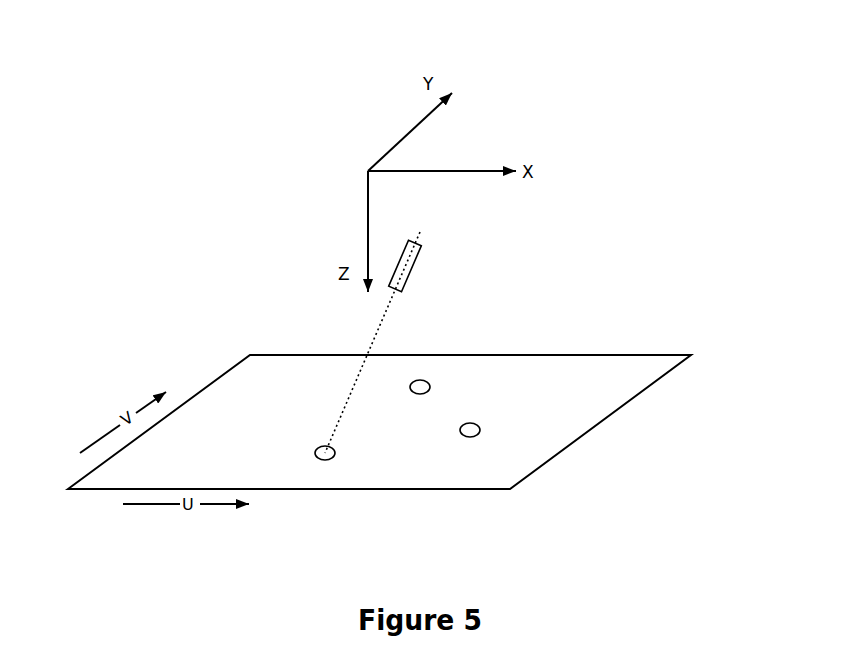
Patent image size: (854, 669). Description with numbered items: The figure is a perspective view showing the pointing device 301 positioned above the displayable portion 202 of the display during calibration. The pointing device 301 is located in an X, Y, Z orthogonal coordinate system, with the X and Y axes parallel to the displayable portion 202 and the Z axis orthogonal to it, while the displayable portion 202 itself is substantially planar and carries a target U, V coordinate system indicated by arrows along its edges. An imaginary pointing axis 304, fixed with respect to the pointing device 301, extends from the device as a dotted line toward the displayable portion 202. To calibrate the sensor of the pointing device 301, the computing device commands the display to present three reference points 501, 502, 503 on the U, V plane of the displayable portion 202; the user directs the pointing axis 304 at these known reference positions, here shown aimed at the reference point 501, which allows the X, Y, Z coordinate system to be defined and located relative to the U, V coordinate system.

The displayable portion 202 is at (232, 365).
The pointing device 301 is at (415, 262).
The pointing axis 304 is at (380, 325).
The reference point 501 is at (303, 453).
The reference point 502 is at (403, 396).
The reference point 503 is at (488, 434).